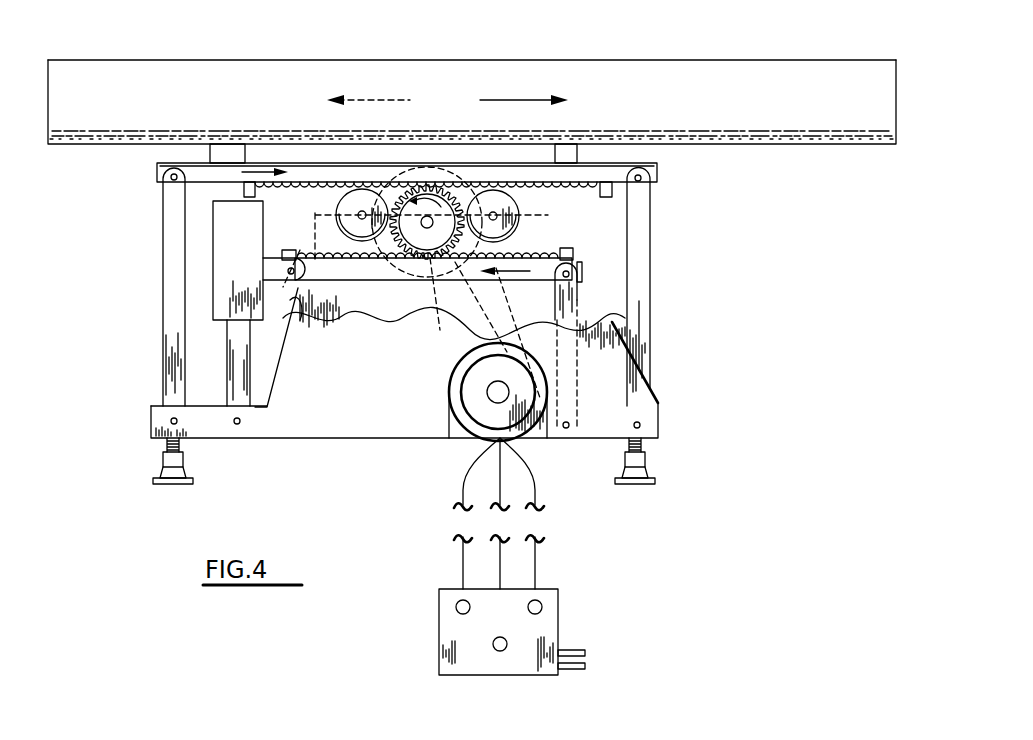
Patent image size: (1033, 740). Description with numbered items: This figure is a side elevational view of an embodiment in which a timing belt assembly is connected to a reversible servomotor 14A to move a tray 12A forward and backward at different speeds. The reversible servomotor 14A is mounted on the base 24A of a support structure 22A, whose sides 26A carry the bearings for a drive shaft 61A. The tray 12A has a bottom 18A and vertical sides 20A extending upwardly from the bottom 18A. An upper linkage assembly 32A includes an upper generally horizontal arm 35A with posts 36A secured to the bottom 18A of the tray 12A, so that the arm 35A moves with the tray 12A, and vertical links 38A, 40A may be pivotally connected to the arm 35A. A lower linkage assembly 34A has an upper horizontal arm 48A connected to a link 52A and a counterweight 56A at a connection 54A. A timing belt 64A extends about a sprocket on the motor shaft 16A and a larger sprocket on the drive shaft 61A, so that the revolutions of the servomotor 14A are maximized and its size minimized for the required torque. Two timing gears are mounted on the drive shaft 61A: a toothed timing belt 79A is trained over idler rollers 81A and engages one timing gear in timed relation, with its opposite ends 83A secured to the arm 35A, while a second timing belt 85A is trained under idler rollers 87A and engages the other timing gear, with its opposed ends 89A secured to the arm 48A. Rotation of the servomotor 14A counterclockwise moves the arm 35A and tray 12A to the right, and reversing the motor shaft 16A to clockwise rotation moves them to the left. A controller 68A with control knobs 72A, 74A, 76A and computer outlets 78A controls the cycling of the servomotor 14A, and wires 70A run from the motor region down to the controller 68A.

The tray 12A is at (353, 52).
The reversible servomotor 14A is at (459, 410).
The motor shaft 16A is at (497, 392).
The bottom 18A is at (780, 146).
The vertical sides 20A is at (675, 60).
The support structure 22A is at (257, 457).
The base 24A is at (283, 440).
The sides 26A is at (358, 409).
The upper linkage assembly 32A is at (665, 273).
The lower linkage assembly 34A is at (592, 298).
The upper horizontal arm 35A is at (292, 165).
The posts 36A is at (210, 151).
The vertical link 38A is at (175, 342).
The vertical link 40A is at (652, 362).
The upper horizontal arm of lower linkage assembly 48A is at (350, 341).
The link 52A is at (577, 310).
The connection 54A is at (288, 271).
The counterweight 56A is at (260, 242).
The drive shaft 61A is at (432, 218).
The timing belt 64A is at (455, 345).
The controller 68A is at (426, 662).
The wires 70A is at (463, 562).
The control knob 72A is at (543, 607).
The control knob 74A is at (456, 607).
The control knob 76A is at (500, 652).
The computer outlets 78A is at (585, 666).
The timing belt 79A is at (335, 168).
The idler rollers 81A is at (337, 207).
The opposite ends of timing belt 83A is at (246, 190).
The timing belt 85A is at (520, 253).
The idler rollers 87A is at (375, 252).
The opposed ends of timing belt 89A is at (283, 256).